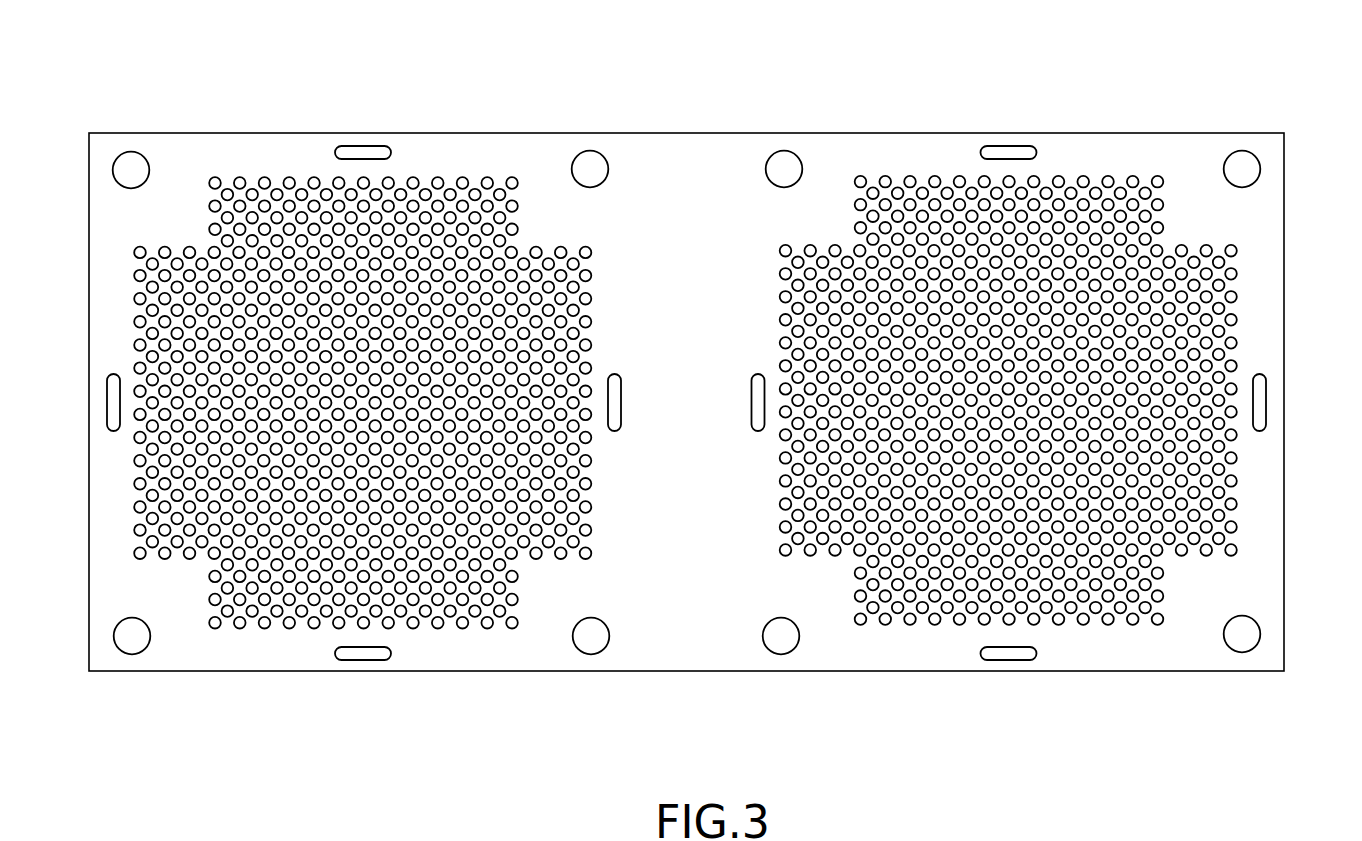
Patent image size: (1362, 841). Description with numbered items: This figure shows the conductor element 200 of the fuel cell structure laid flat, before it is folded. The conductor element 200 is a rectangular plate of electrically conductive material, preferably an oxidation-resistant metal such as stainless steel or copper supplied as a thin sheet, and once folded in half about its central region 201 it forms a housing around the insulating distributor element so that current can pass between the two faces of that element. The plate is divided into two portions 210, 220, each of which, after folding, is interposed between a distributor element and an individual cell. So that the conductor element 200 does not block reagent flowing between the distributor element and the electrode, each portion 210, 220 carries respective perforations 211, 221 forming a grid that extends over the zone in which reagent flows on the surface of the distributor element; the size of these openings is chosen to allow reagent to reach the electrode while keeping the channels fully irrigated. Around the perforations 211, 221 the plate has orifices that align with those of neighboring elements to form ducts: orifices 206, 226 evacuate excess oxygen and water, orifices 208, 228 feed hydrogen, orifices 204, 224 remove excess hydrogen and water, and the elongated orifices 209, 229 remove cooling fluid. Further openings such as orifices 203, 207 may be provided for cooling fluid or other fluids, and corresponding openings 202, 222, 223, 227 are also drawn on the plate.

The conductor element 200 is at (660, 130).
The central region of plate 201 is at (697, 222).
The mounting hole 202 is at (134, 640).
The orifice 203 is at (110, 411).
The orifice 204 is at (135, 167).
The orifice 206 is at (600, 167).
The orifice 207 is at (612, 397).
The orifice 208 is at (588, 640).
The orifice 209 is at (371, 157).
The portion 210 is at (251, 150).
The perforations 211 is at (452, 238).
The portion 220 is at (900, 150).
The perforations 221 is at (1098, 240).
The mounting hole 222 is at (781, 638).
The side slot 223 is at (1264, 405).
The orifice 224 is at (786, 165).
The orifice 226 is at (1246, 165).
The slot 227 is at (757, 389).
The orifice 228 is at (1238, 636).
The orifice 229 is at (1018, 157).